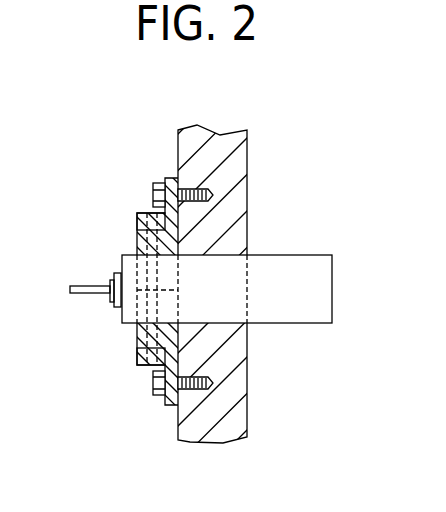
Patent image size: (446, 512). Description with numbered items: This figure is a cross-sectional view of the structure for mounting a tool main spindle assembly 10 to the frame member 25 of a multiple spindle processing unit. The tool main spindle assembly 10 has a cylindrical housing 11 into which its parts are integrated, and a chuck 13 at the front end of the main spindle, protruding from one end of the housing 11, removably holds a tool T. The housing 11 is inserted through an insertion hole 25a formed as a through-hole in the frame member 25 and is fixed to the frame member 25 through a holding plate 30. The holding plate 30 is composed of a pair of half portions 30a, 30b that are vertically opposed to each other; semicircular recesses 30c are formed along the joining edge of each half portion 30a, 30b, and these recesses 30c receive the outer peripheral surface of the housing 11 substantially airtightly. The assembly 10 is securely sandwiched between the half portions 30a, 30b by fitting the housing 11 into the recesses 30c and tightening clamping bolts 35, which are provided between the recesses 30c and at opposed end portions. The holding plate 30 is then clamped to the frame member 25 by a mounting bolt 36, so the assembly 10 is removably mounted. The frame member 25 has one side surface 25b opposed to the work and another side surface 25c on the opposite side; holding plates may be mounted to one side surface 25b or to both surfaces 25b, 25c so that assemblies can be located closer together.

The tool main spindle assembly 10 is at (274, 249).
The cylindrical housing 11 is at (296, 323).
The chuck 13 is at (117, 306).
The tool T is at (78, 293).
The frame member 25 is at (247, 139).
The insertion hole 25a is at (248, 256).
The one side surface of the frame member 25b is at (178, 430).
The other side surface of the frame member 25c is at (249, 408).
The holding plate 30 is at (141, 207).
The half portion 30a is at (137, 230).
The half portion 30b is at (137, 356).
The semicircular recess 30c is at (168, 260).
The clamping bolt 35 is at (137, 243).
The mounting bolt 36 is at (160, 182).